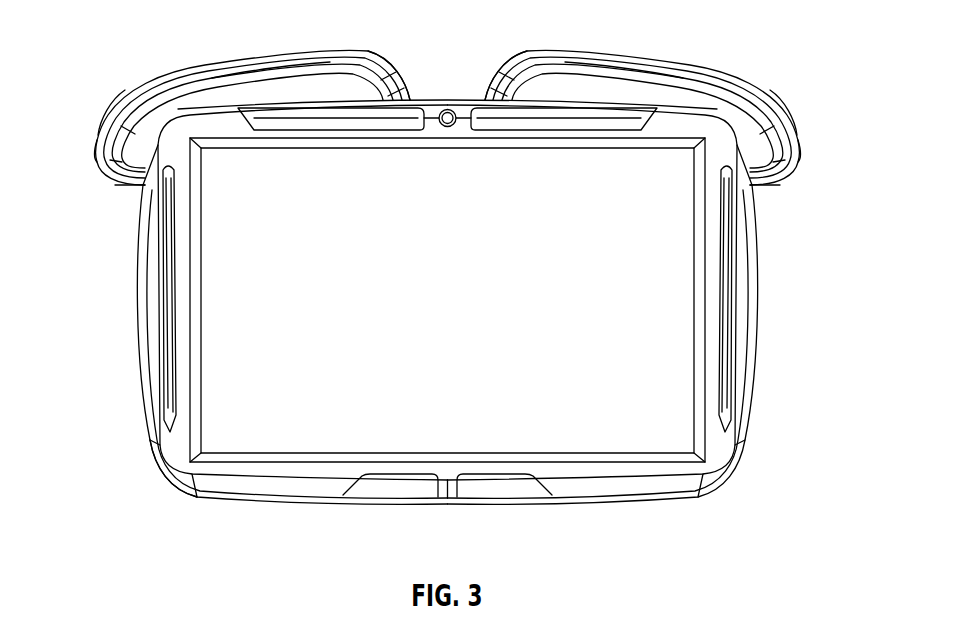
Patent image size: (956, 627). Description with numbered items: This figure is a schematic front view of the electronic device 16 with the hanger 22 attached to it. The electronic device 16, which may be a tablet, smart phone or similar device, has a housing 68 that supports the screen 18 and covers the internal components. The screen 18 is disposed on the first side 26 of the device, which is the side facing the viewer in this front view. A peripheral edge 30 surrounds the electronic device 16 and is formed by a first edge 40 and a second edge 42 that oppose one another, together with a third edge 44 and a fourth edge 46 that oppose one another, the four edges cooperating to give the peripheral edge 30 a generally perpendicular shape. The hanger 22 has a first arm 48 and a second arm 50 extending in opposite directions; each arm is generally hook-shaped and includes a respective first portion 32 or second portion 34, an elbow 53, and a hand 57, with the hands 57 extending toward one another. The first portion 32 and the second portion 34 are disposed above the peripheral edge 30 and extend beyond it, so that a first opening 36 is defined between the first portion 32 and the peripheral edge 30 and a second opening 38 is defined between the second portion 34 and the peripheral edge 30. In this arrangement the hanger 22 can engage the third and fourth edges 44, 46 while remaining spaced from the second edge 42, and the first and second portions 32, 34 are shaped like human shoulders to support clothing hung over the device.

The electronic device 16 is at (449, 283).
The screen 18 is at (675, 420).
The hanger 22 is at (193, 72).
The first side 26 is at (496, 300).
The peripheral edge 30 is at (446, 298).
The first portion 32 is at (617, 62).
The second portion 34 is at (264, 66).
The first opening 36 is at (545, 88).
The second opening 38 is at (308, 88).
The first edge 40 is at (445, 100).
The second edge 42 is at (482, 503).
The third edge 44 is at (757, 270).
The fourth edge 46 is at (135, 260).
The first arm 48 is at (787, 128).
The second arm 50 is at (107, 128).
The elbow 53 is at (92, 155).
The hand 57 is at (127, 182).
The housing 68 is at (175, 470).